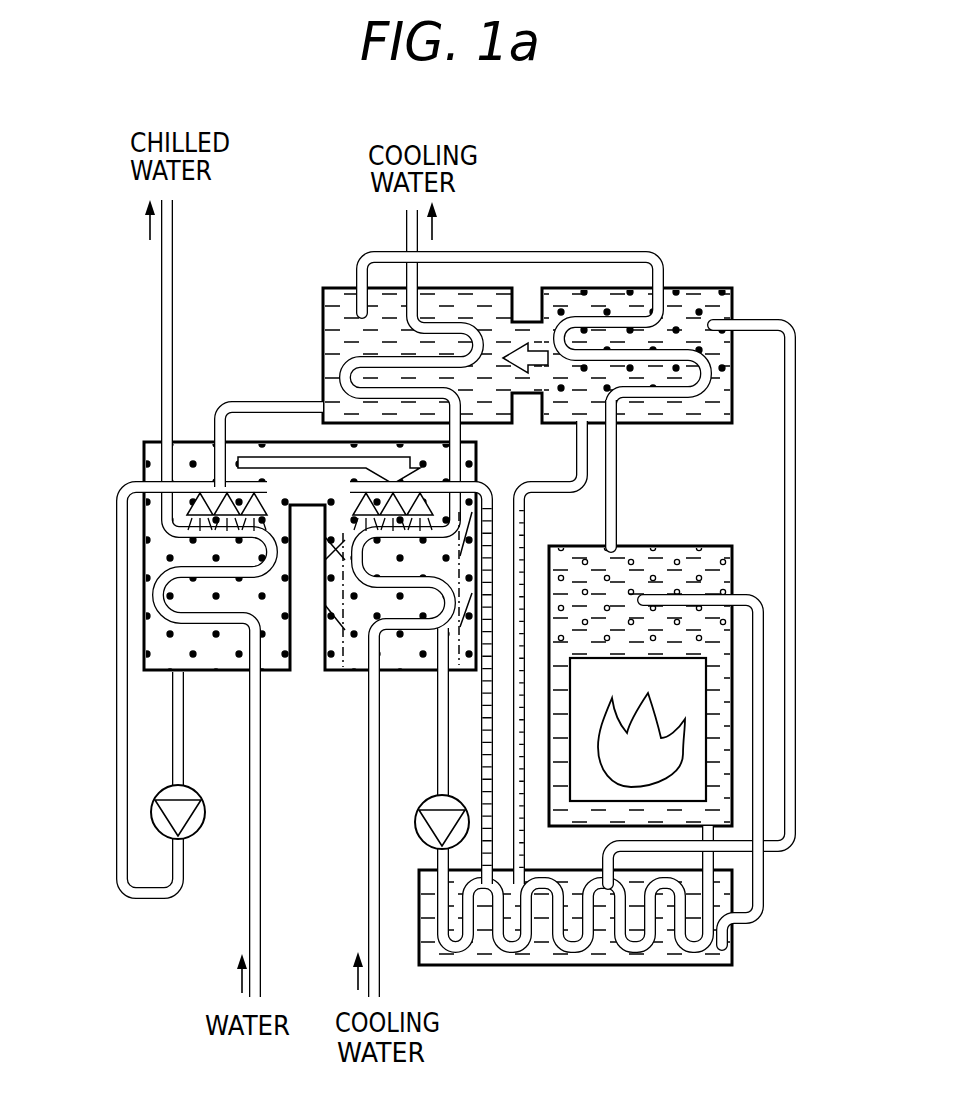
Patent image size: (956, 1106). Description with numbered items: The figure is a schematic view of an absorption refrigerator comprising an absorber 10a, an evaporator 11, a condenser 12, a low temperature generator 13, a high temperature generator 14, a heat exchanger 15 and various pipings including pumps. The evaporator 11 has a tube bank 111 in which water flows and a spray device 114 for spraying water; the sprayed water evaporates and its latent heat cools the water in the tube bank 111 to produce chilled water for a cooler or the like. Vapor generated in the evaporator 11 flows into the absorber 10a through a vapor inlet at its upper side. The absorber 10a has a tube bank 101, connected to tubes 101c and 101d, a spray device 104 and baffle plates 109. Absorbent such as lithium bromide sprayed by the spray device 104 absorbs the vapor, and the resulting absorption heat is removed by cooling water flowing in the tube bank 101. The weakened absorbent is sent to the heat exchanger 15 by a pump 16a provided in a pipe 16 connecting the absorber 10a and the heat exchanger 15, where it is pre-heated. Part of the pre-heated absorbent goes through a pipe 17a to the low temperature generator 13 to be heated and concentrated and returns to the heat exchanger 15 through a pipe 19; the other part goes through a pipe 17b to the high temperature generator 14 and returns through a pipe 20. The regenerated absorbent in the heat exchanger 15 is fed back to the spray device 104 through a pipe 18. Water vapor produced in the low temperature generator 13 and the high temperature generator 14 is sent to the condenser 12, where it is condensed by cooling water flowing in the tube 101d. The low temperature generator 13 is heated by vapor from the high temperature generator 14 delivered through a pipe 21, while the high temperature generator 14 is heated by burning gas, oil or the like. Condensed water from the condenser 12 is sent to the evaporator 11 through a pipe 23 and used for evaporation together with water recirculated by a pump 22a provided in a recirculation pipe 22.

The absorber 10a is at (327, 560).
The evaporator 11 is at (210, 672).
The condenser 12 is at (338, 288).
The low temperature generator 13 is at (710, 288).
The high temperature generator 14 is at (700, 546).
The heat exchanger 15 is at (610, 958).
The pipe 16 is at (445, 752).
The pump 16a is at (430, 797).
The pipe 17a is at (797, 522).
The pipe 17b is at (764, 734).
The pipe 18 is at (496, 488).
The pipe 19 is at (527, 537).
The pipe 20 is at (722, 858).
The pipe 21 is at (616, 450).
The recirculation pipe 22 is at (117, 700).
The pump 22a is at (218, 775).
The pipe 23 is at (242, 402).
The tube bank 101 is at (410, 626).
The tube 101c is at (370, 788).
The tube 101d is at (415, 272).
The spray device 104 is at (352, 505).
The baffle plates 109 is at (330, 600).
The tube bank 111 is at (248, 580).
The spray device 114 is at (190, 506).